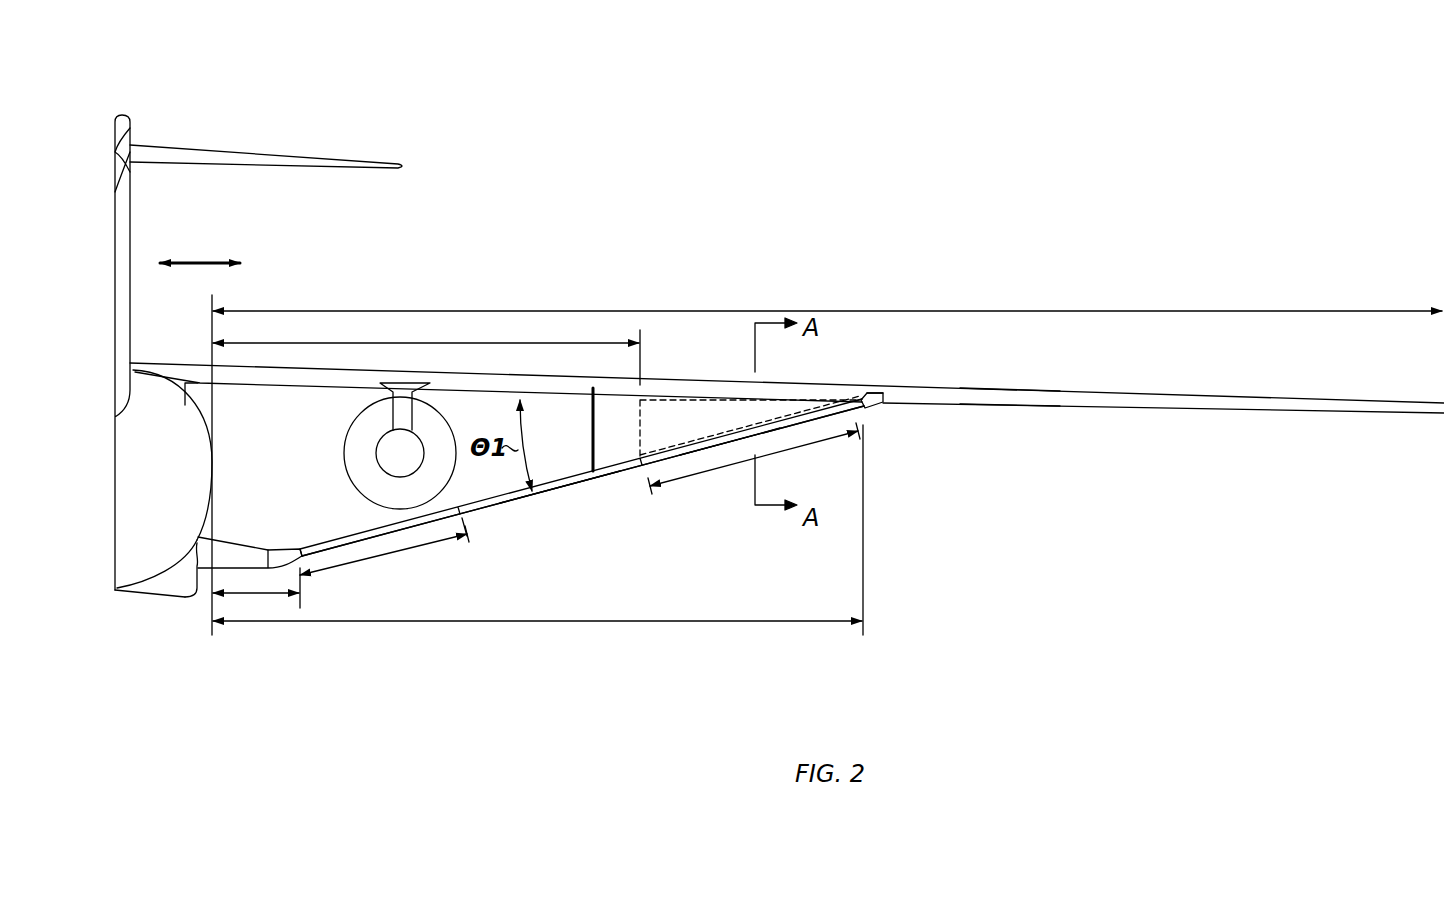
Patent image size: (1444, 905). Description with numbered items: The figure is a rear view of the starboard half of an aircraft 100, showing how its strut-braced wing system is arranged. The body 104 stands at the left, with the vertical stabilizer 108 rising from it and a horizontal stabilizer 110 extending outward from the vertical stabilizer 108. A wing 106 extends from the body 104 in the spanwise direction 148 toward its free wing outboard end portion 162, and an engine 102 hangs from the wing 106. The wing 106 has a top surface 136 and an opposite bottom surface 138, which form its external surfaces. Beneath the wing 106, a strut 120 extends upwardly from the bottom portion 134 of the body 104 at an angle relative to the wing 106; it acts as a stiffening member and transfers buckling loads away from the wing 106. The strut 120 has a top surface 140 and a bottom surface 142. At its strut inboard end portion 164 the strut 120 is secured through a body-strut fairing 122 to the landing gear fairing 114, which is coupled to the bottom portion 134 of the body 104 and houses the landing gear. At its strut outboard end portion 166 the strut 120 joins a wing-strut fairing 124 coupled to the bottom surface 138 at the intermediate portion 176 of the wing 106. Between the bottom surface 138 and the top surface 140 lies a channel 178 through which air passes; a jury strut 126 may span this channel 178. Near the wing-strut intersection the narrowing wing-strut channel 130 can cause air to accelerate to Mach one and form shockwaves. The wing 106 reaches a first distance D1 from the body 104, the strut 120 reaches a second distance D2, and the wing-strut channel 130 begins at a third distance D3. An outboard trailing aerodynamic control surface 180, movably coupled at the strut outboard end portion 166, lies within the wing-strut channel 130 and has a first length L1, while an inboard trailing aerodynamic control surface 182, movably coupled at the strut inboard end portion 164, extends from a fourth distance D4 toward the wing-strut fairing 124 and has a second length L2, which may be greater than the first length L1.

The aircraft 100 is at (870, 193).
The engine 102 is at (345, 442).
The body 104 is at (193, 403).
The wing 106 is at (1287, 414).
The vertical stabilizer 108 is at (131, 222).
The horizontal stabilizer 110 is at (312, 153).
The landing gear fairing 114 is at (178, 602).
The strut 120 is at (610, 478).
The body-strut fairing 122 is at (220, 548).
The wing-strut fairing 124 is at (879, 399).
The jury strut 126 is at (593, 405).
The wing-strut channel 130 is at (750, 427).
The bottom portion of the body 134 is at (120, 598).
The top surface of the wing 136 is at (1018, 388).
The bottom surface of the wing 138 is at (1020, 405).
The top surface of the strut 140 is at (561, 484).
The bottom surface of the strut 142 is at (560, 491).
The spanwise direction 148 is at (205, 262).
The wing outboard end portion 162 is at (1423, 465).
The strut inboard end portion 164 is at (283, 557).
The strut outboard end portion 166 is at (861, 400).
The intermediate portion of the wing 176 is at (873, 388).
The channel 178 is at (281, 476).
The outboard trailing aerodynamic control surface 180 is at (728, 448).
The inboard trailing aerodynamic control surface 182 is at (438, 524).
The first distance D1 is at (820, 311).
The second distance D2 is at (568, 622).
The third distance D3 is at (392, 343).
The fourth distance D4 is at (262, 596).
The first length L1 is at (782, 453).
The second length L2 is at (383, 556).